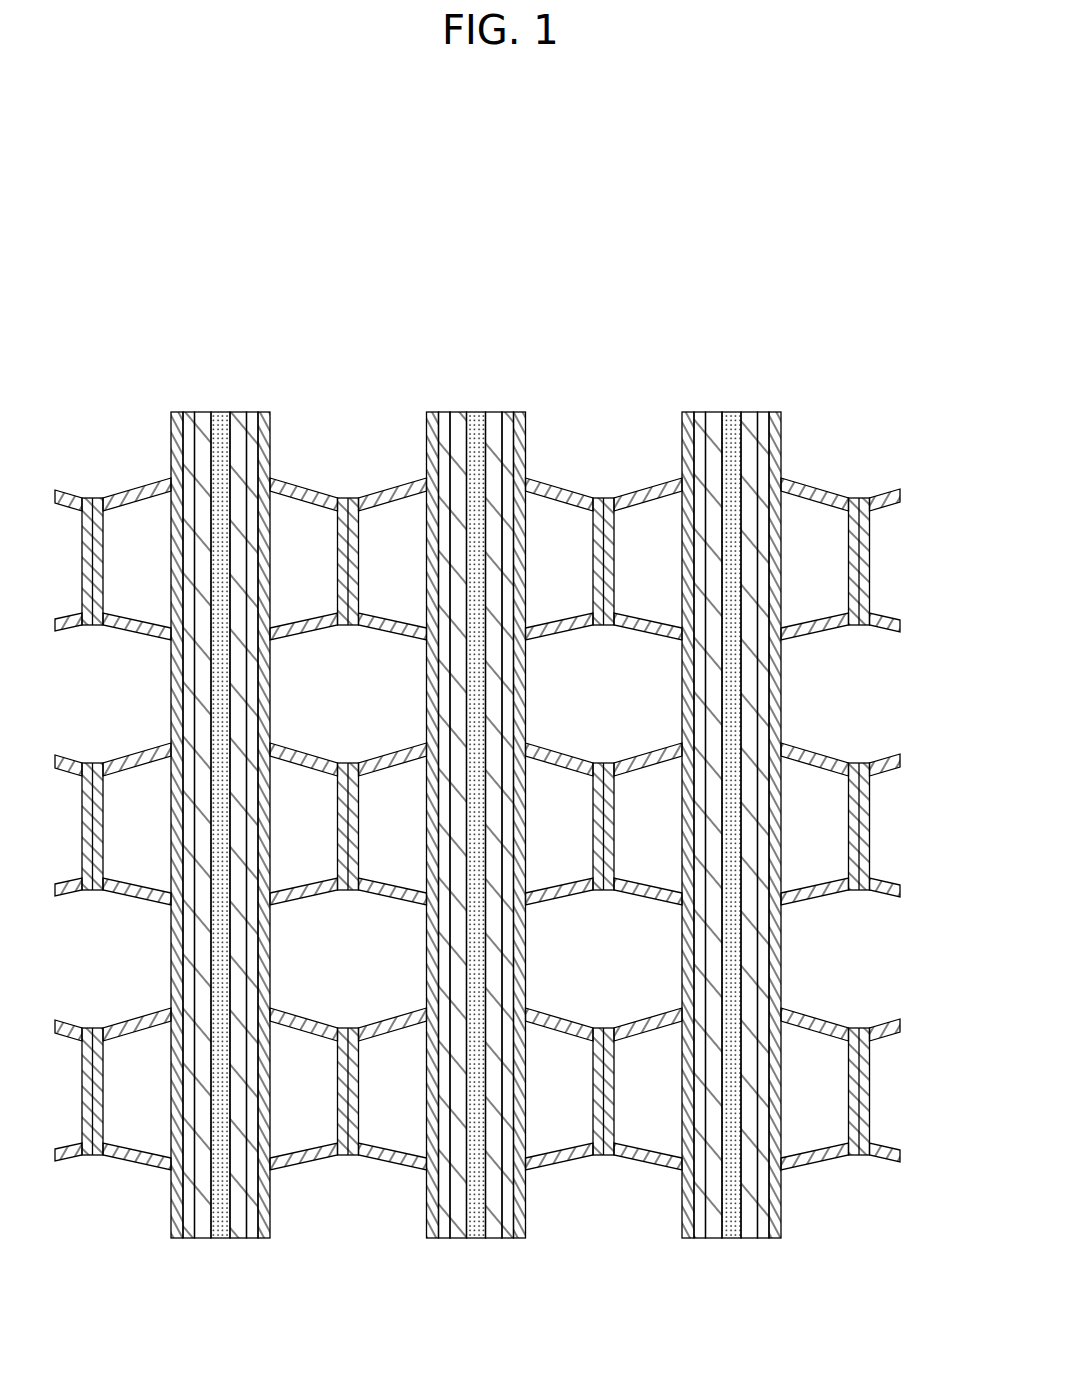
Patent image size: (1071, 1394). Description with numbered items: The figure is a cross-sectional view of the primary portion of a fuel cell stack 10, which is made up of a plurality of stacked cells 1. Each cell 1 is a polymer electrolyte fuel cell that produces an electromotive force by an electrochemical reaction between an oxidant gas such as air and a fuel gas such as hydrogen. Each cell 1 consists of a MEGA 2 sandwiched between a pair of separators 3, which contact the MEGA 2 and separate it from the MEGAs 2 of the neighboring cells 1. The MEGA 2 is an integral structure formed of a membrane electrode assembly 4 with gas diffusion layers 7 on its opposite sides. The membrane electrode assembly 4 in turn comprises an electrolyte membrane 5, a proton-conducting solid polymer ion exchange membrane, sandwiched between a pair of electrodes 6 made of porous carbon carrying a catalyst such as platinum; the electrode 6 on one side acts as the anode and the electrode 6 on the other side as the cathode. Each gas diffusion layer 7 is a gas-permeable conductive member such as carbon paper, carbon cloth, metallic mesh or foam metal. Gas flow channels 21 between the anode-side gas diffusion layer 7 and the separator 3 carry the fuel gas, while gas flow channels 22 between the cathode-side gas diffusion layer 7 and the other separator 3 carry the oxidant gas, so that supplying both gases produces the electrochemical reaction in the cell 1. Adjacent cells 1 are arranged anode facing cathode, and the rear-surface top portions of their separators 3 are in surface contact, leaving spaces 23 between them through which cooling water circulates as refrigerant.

The fuel cell stack 10 is at (868, 182).
The cell 1 is at (316, 270).
The MEGA 2 is at (292, 312).
The separator 3 is at (320, 490).
The membrane electrode assembly 4 is at (262, 352).
The electrolyte membrane 5 is at (220, 418).
The electrode 6 is at (238, 418).
The gas diffusion layer 7 is at (252, 418).
The gas flow channel 21 is at (127, 572).
The gas flow channel 22 is at (284, 572).
The space 23 is at (332, 704).